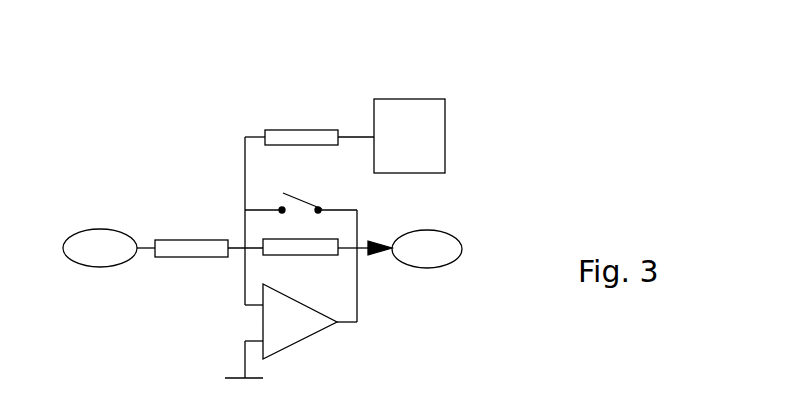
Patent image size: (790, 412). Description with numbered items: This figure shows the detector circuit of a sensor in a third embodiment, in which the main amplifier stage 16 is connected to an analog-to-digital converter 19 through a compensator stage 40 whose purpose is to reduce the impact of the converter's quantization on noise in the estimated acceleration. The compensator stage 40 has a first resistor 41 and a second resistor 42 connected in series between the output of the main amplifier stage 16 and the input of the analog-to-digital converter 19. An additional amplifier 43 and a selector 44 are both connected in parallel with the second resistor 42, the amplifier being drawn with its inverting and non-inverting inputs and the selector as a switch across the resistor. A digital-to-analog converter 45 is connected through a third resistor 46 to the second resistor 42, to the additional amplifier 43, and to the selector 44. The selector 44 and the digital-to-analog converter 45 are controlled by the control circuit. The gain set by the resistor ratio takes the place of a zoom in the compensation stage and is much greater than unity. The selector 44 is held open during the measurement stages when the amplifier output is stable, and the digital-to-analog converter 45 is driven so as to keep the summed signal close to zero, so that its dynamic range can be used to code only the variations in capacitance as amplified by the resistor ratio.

The main amplifier stage 16 is at (87, 186).
The analog-to-digital converter 19 is at (452, 235).
The compensator stage 40 is at (274, 195).
The first resistor 41 is at (188, 250).
The second resistor 42 is at (287, 248).
The additional amplifier 43 is at (310, 330).
The selector 44 is at (302, 202).
The digital-to-analog converter 45 is at (435, 107).
The third resistor 46 is at (277, 135).